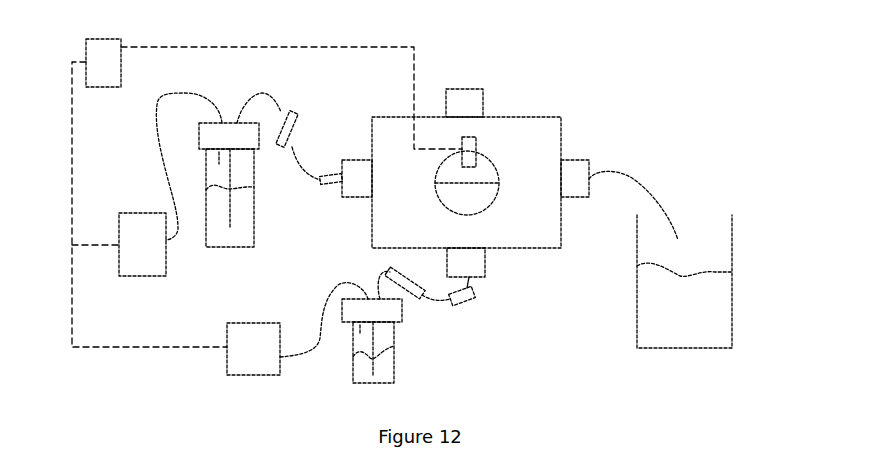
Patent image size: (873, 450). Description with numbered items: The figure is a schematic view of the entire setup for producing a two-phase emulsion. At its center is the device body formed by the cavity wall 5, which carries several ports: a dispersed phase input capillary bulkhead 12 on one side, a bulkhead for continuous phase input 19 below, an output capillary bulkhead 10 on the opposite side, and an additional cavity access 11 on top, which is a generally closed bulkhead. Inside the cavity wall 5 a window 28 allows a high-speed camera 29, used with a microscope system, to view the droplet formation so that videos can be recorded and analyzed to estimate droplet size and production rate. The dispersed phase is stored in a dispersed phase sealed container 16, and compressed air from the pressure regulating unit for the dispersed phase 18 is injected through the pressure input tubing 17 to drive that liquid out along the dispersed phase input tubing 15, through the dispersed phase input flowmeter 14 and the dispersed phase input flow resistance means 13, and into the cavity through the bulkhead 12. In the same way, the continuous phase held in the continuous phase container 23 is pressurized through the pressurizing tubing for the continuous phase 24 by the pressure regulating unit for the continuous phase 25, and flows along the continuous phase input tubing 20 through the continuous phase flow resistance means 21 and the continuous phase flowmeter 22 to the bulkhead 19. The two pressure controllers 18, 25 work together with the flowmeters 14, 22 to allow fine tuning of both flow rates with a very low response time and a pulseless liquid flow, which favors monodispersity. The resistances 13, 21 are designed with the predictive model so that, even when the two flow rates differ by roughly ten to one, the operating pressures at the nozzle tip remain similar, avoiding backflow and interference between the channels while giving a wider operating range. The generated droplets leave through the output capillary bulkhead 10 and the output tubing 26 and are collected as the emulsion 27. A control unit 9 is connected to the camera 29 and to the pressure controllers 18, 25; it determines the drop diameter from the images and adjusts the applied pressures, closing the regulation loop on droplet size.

The cavity wall 5 is at (527, 117).
The control unit 9 is at (98, 87).
The output capillary bulkhead 10 is at (578, 158).
The additional cavity access 11 is at (448, 89).
The dispersed phase input capillary bulkhead 12 is at (347, 160).
The dispersed phase input flow resistance means 13 is at (323, 185).
The dispersed phase input flowmeter 14 is at (295, 127).
The dispersed phase input tubing 15 is at (257, 93).
The dispersed phase sealed container 16 is at (255, 213).
The pressure input tubing 17 is at (162, 92).
The pressure regulating unit for the dispersed phase 18 is at (143, 276).
The bulkhead for continuous phase input 19 is at (487, 262).
The continuous phase input tubing 20 is at (446, 303).
The continuous phase flow resistance means 21 is at (474, 296).
The continuous phase flowmeter 22 is at (418, 297).
The continuous phase container 23 is at (394, 345).
The pressurizing tubing for the continuous phase 24 is at (320, 340).
The pressure regulating unit for the continuous phase 25 is at (227, 368).
The output tubing 26 is at (633, 172).
The emulsion 27 is at (707, 266).
The window 28 is at (480, 205).
The camera 29 is at (478, 140).